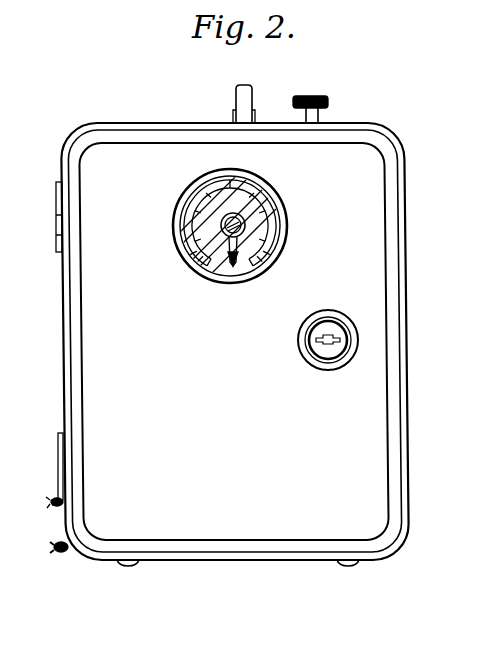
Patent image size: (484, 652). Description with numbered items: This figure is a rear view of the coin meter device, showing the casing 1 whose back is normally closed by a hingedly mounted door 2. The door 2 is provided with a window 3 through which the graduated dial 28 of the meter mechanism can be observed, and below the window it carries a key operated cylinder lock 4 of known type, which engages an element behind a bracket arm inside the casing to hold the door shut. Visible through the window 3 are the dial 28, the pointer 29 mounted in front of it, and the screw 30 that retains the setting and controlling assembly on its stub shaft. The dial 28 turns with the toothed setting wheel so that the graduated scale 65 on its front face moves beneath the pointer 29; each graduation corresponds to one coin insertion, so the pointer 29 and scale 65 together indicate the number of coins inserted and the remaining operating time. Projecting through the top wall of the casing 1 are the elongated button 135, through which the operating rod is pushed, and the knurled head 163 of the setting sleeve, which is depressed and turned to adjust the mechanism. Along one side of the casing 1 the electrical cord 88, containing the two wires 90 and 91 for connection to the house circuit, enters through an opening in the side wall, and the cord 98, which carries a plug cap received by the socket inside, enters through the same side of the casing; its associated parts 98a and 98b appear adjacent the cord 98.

The casing 1 is at (146, 118).
The door 2 is at (234, 341).
The window 3 is at (283, 211).
The key operated cylinder lock 4 is at (335, 328).
The graduated dial 28 is at (272, 243).
The pointer 29 is at (226, 262).
The screw 30 is at (221, 224).
The graduated scale 65 is at (277, 227).
The electrical cord 88 is at (64, 553).
The wire 90 is at (57, 553).
The wire 91 is at (54, 547).
The cord 98 is at (55, 498).
The clasp arm 98a is at (52, 500).
The clasp arm 98b is at (53, 506).
The elongated button 135 is at (236, 98).
The knurled head 163 is at (313, 98).